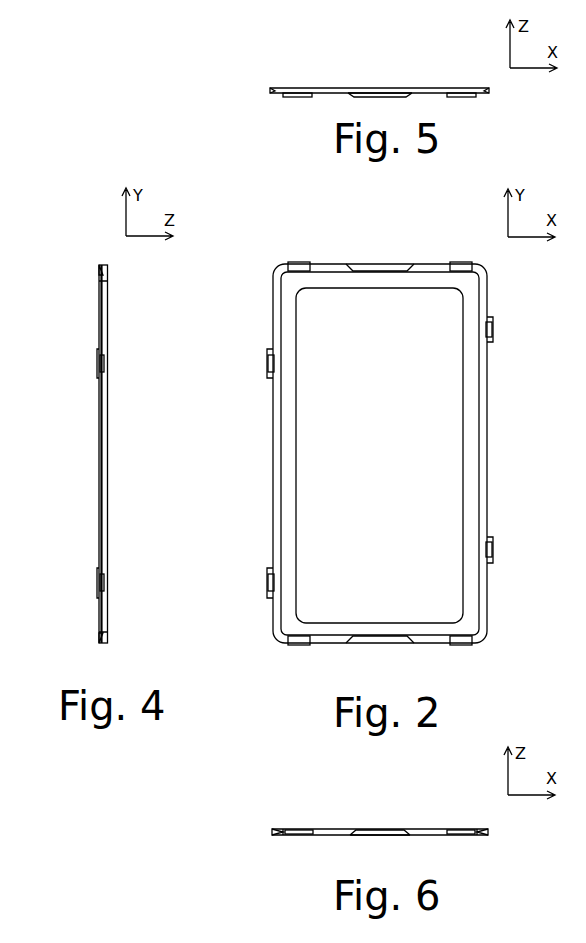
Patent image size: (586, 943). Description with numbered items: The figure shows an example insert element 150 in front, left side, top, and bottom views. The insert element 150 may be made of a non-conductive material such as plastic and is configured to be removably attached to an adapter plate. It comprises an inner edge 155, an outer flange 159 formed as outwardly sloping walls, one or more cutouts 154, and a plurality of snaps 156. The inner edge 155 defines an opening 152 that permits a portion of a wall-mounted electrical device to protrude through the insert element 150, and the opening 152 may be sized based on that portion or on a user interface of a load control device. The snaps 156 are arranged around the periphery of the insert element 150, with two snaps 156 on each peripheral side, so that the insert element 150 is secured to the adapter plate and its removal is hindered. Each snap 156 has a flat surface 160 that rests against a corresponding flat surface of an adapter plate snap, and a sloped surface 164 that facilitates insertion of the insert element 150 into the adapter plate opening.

In FIG. 2, the insert element 150 is at (262, 260).
In FIG. 2, the opening 152 is at (446, 492).
In FIG. 5, the cutouts 154 is at (376, 88).
In FIG. 2, the cutouts 154 is at (370, 265).
In FIG. 6, the cutouts 154 is at (375, 829).
In FIG. 2, the inner edge 155 is at (463, 400).
In FIG. 5, the snaps 156 is at (292, 97).
In FIG. 2, the snaps 156 is at (299, 262).
In FIG. 4, the snaps 156 is at (100, 360).
In FIG. 6, the snaps 156 is at (300, 838).
In FIG. 2, the outer flange 159 is at (479, 449).
In FIG. 4, the outer flange 159 is at (102, 441).
In FIG. 4, the flat surface 160 is at (100, 266).
In FIG. 6, the flat surface 160 is at (278, 838).
In FIG. 4, the sloped surface 164 is at (106, 269).
In FIG. 6, the sloped surface 164 is at (275, 830).